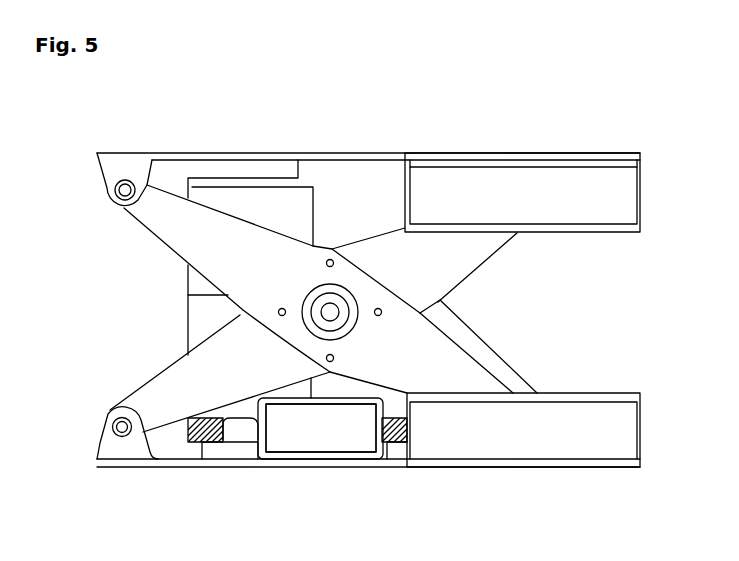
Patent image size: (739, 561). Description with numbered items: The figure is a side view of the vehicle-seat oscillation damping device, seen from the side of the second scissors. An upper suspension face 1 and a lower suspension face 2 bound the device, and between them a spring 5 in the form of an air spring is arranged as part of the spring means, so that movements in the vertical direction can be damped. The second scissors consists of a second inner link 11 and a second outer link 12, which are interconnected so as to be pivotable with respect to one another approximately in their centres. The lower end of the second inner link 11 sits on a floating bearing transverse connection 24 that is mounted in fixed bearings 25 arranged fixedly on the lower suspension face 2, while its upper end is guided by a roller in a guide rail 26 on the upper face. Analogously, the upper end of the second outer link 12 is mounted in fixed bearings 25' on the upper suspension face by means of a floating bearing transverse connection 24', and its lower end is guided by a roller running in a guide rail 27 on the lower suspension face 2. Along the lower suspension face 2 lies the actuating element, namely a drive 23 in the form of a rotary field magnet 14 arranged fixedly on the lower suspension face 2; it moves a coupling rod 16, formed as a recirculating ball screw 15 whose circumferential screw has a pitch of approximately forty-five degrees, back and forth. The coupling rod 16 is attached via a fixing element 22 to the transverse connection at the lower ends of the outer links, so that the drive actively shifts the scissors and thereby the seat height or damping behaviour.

The upper suspension face 1 is at (360, 155).
The lower suspension face 2 is at (252, 468).
The spring 5 is at (195, 320).
The second inner link 11 is at (150, 400).
The second outer link 12 is at (165, 230).
The rotary field magnet 14 is at (321, 428).
The recirculating ball screw 15 is at (382, 462).
The coupling rod 16 is at (397, 438).
The fixing element 22 is at (472, 337).
The drive 23 is at (310, 440).
The floating bearing transverse connection 24 is at (78, 431).
The floating bearing transverse connection 24' is at (81, 214).
The fixed bearings 25 is at (101, 468).
The fixed bearings 25' is at (102, 149).
The guide rail 26 is at (572, 183).
The guide rail 27 is at (562, 447).